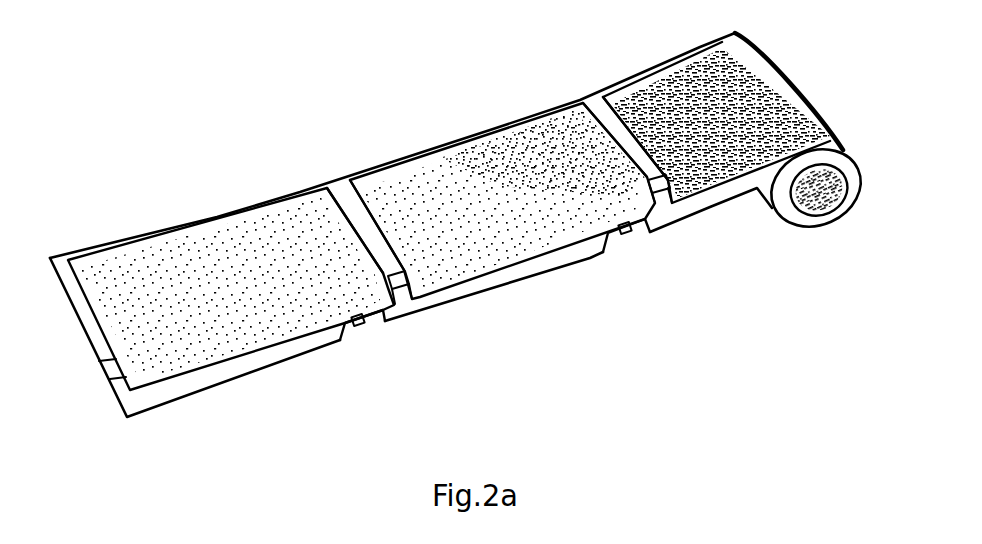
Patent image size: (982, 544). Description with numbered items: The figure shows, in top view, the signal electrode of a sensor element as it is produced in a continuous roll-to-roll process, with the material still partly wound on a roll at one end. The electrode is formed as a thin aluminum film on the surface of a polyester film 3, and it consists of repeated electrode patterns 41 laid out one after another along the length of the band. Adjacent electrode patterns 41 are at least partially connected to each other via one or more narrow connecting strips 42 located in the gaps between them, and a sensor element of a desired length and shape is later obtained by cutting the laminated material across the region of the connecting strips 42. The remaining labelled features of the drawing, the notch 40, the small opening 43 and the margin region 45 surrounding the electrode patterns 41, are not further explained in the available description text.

The polyester film 3 is at (341, 186).
The notch in edge region 40 is at (367, 332).
The electrode pattern 41 is at (469, 158).
The connecting strip 42 is at (409, 294).
The registration hole 43 is at (343, 312).
The edge region of flexible substrate 45 is at (486, 291).